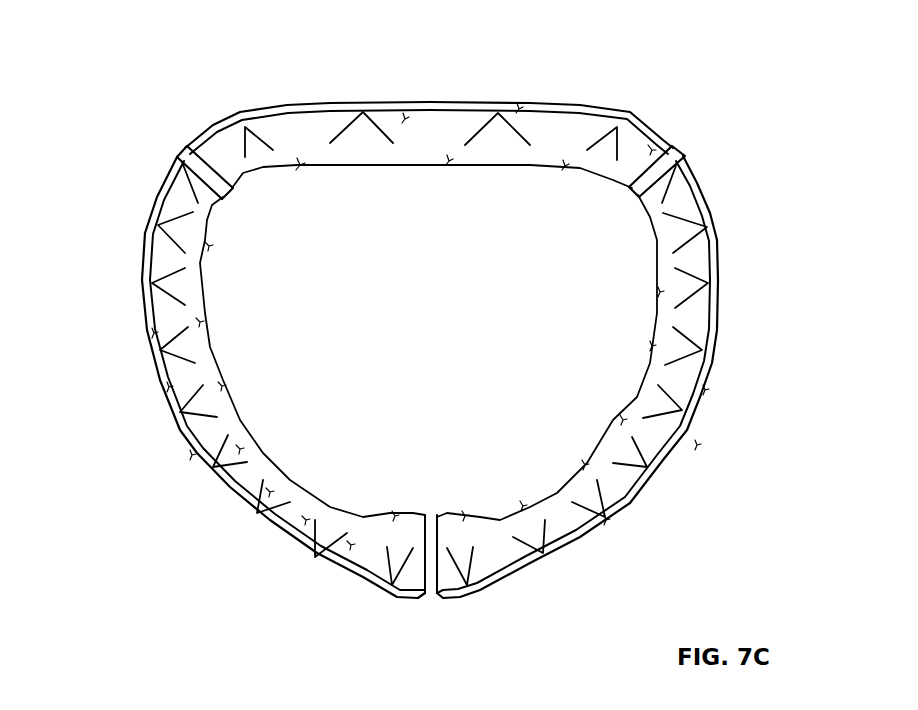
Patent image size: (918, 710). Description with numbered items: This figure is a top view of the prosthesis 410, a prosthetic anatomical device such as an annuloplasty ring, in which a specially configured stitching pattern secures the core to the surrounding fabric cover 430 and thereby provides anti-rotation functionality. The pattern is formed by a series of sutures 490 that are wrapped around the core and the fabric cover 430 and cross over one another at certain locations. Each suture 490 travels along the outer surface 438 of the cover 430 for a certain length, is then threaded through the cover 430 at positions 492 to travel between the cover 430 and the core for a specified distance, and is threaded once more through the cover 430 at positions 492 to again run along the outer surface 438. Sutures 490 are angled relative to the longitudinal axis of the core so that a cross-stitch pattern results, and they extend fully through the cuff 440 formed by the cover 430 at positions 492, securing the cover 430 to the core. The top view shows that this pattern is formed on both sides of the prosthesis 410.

The prosthesis 410 is at (116, 36).
The fabric cover 430 is at (633, 147).
The outer surface of cover 438 is at (375, 147).
The cuff 440 is at (209, 137).
The suture 490 is at (480, 132).
The positions 492 is at (330, 143).